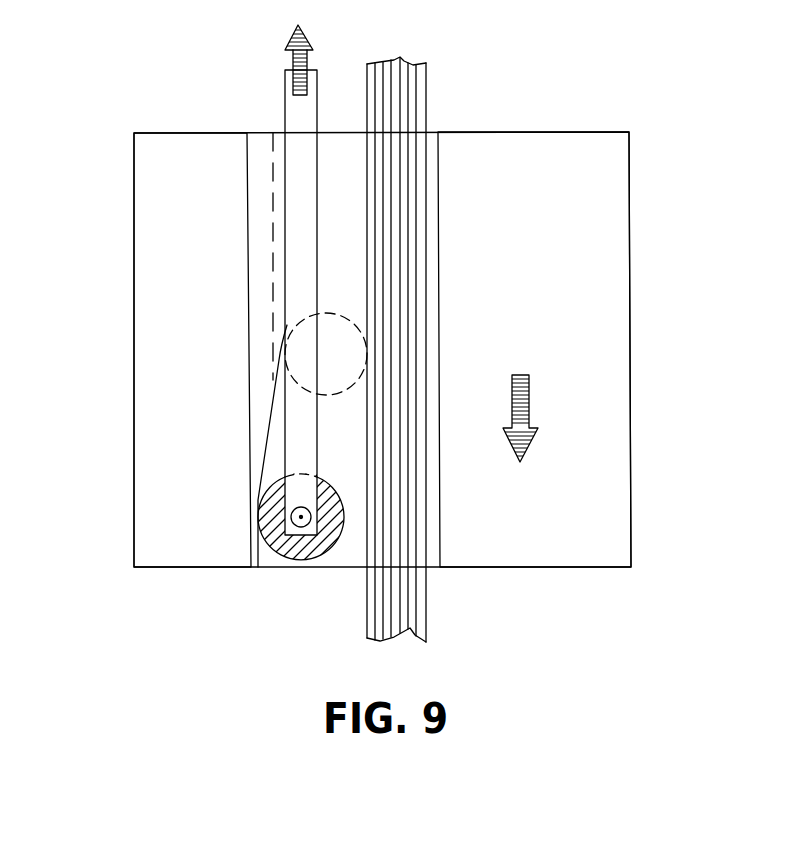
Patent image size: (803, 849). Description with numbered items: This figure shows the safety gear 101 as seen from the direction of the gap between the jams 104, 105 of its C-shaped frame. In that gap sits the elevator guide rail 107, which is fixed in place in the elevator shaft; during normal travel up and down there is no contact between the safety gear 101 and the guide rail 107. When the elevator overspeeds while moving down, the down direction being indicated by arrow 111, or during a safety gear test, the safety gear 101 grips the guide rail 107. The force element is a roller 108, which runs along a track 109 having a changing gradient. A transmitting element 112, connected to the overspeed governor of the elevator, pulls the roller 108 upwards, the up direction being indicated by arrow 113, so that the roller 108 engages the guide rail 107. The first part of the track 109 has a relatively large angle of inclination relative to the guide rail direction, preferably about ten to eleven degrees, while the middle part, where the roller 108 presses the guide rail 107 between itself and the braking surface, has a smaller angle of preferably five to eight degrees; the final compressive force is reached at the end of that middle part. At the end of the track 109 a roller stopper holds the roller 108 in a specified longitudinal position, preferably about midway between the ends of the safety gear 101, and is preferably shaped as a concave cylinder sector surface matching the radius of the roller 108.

The safety gear 101 is at (230, 582).
The jam 104 is at (585, 234).
The jam 105 is at (156, 372).
The elevator guide rail 107 is at (400, 594).
The roller 108 is at (306, 548).
The track 109 is at (283, 396).
The arrow indicating down direction 111 is at (530, 401).
The transmitting element 112 is at (290, 99).
The arrow indicating up direction 113 is at (289, 48).